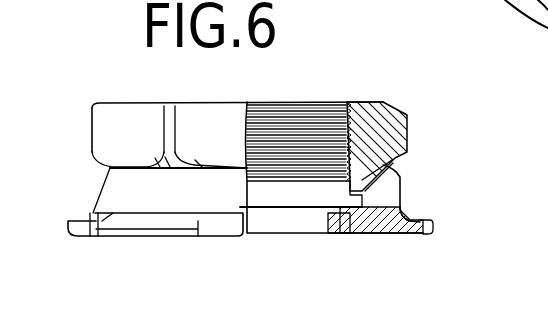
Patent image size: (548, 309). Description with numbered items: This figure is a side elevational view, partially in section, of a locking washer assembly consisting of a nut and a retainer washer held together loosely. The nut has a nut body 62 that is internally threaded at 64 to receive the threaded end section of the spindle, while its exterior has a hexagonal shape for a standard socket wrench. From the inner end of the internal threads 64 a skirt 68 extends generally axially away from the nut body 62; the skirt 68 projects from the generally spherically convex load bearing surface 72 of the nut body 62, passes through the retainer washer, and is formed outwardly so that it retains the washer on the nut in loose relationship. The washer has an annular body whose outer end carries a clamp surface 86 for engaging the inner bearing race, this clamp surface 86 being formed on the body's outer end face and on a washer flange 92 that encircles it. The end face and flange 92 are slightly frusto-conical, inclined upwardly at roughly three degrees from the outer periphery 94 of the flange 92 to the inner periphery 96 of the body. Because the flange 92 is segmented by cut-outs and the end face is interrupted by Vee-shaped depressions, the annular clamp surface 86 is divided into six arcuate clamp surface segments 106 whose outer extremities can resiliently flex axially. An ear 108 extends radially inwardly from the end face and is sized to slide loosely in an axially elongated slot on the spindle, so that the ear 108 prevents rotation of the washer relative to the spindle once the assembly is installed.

The nut body 62 is at (370, 128).
The internal threads 64 is at (340, 130).
The load bearing surface 72 is at (178, 160).
The skirt 68 is at (365, 193).
The clamp surface 86 is at (393, 235).
The washer flange 92 is at (407, 222).
The outer periphery 94 is at (427, 230).
The inner periphery 96 is at (300, 227).
The clamp surface segments 106 is at (118, 235).
The ear 108 is at (345, 222).